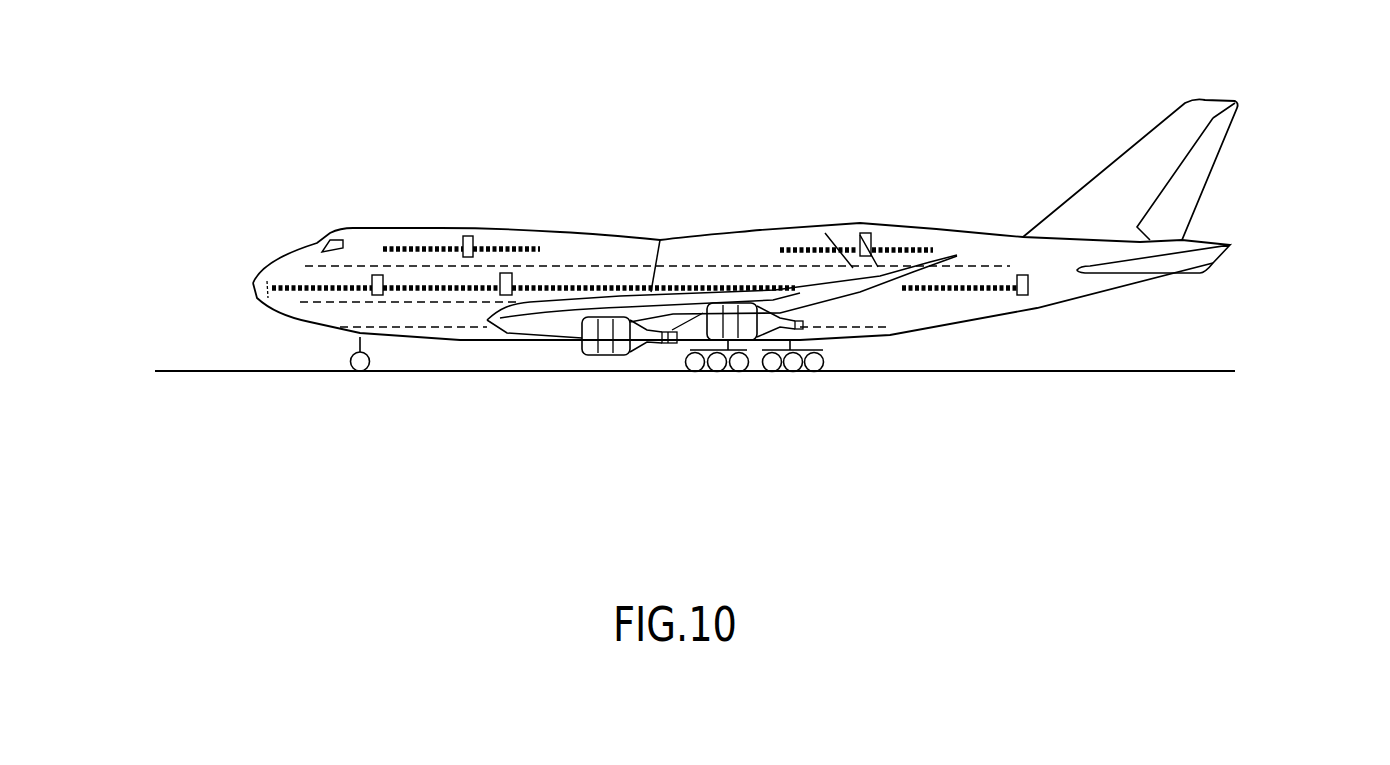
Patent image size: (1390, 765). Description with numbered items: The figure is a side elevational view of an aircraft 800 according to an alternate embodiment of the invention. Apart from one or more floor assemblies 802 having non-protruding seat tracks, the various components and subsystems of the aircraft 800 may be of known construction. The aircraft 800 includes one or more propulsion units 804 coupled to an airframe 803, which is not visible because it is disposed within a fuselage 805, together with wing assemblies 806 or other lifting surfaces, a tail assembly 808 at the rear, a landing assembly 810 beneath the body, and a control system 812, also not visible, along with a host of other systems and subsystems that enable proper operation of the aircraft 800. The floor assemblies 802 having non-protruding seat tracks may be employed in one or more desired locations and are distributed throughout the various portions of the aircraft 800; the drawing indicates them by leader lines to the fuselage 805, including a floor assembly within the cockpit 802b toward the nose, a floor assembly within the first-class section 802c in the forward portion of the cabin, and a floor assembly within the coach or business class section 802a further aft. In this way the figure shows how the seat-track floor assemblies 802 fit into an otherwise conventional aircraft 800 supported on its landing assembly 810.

The aircraft 800 is at (741, 269).
The floor assemblies 802 is at (857, 223).
The coach or business class section floor assembly 802a is at (817, 220).
The cockpit floor assembly 802b is at (273, 258).
The first-class section floor assembly 802c is at (413, 262).
The airframe 803 is at (900, 337).
The propulsion units 804 is at (537, 343).
The fuselage 805 is at (887, 223).
The wing assemblies 806 is at (673, 312).
The tail assembly 808 is at (1277, 148).
The landing assembly 810 is at (850, 417).
The control system 812 is at (303, 233).